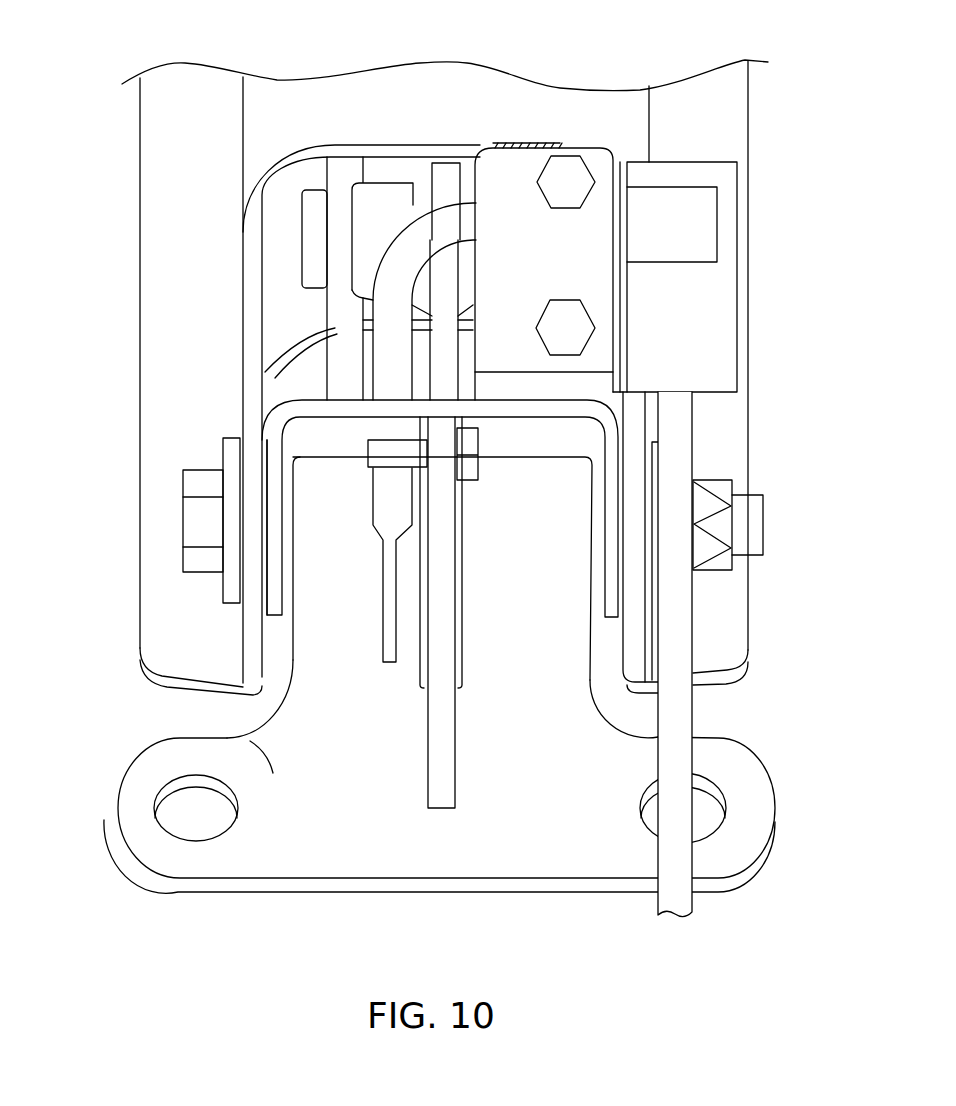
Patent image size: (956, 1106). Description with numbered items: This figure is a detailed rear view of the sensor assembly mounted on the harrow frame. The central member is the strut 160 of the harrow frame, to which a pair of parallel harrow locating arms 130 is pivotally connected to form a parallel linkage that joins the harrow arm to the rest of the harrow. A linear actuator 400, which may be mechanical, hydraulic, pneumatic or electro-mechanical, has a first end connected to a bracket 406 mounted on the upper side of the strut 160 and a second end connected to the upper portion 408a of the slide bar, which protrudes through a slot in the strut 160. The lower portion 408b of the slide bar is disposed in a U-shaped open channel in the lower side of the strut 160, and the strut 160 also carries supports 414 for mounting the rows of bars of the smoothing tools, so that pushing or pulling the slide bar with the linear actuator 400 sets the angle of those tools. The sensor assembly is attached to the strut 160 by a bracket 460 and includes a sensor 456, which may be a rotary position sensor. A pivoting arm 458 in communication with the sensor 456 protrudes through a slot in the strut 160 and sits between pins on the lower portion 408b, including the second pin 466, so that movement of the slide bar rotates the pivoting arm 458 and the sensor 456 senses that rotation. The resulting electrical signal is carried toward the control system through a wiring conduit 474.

The harrow locating arm 130 is at (273, 108).
The linear actuator 400 is at (420, 183).
The upper portion of slide bar 408a is at (448, 182).
The lower portion of slide bar 408b is at (440, 743).
The bracket 460 is at (515, 173).
The sensor 456 is at (690, 215).
The bracket 406 is at (337, 322).
The strut 160 is at (285, 420).
The wiring conduit 474 is at (680, 458).
The second pin 466 is at (385, 458).
The pivoting arm 458 is at (380, 498).
The support 414 is at (230, 738).